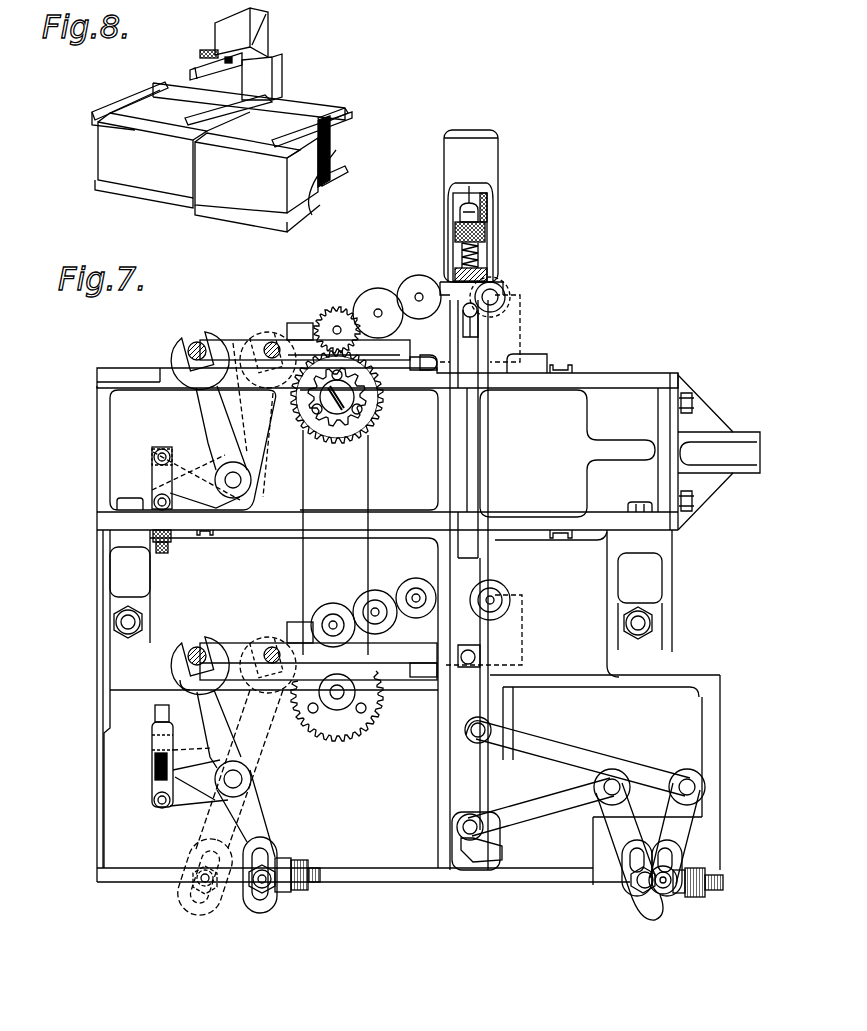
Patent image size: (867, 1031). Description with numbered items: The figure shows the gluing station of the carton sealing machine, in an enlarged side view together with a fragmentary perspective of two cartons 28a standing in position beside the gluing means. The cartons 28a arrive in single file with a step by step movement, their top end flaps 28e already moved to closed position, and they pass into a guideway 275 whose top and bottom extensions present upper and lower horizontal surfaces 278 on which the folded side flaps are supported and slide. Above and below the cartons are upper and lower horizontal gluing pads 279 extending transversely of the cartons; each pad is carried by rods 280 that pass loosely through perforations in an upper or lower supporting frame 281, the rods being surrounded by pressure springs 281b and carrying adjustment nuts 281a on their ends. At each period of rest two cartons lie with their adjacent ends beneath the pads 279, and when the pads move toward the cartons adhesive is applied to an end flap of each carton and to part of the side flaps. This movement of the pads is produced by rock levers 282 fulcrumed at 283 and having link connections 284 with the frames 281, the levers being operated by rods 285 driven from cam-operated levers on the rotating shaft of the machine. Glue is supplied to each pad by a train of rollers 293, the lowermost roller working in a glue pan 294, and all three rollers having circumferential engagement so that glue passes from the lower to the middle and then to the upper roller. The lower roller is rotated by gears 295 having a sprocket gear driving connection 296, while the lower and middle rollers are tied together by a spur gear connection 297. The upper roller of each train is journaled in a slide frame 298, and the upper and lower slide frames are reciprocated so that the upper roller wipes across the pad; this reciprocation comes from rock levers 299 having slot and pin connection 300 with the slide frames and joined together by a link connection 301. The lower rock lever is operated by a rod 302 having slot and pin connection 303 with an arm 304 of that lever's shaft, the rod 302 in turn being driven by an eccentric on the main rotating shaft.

In FIG. 8, the cartons 28a is at (207, 161).
In FIG. 8, the top end flaps 28e is at (140, 117).
In FIG. 8, the guideway 275 is at (321, 192).
In FIG. 8, the horizontal surfaces 278 is at (345, 112).
In FIG. 8, the gluing pads 279 is at (196, 72).
In FIG. 7, the gluing pads 279 is at (487, 274).
In FIG. 7, the rods 280 is at (471, 206).
In FIG. 8, the supporting frames 281 is at (213, 32).
In FIG. 7, the supporting frames 281 is at (485, 230).
In FIG. 7, the adjustment nuts 281a is at (460, 212).
In FIG. 7, the pressure springs 281b is at (480, 258).
In FIG. 7, the rock levers 282 is at (535, 748).
In FIG. 7, the fulcrum 283 is at (684, 775).
In FIG. 7, the link connections 284 is at (482, 707).
In FIG. 7, the rods 285 is at (717, 895).
In FIG. 7, the train of rollers 293 is at (370, 290).
In FIG. 7, the glue pan 294 is at (236, 340).
In FIG. 7, the gears 295 is at (312, 420).
In FIG. 7, the sprocket gear driving connection 296 is at (367, 413).
In FIG. 7, the spur gear connection 297 is at (362, 333).
In FIG. 7, the slide frame 298 is at (421, 278).
In FIG. 7, the rock levers 299 is at (203, 413).
In FIG. 7, the slot and pin connection 300 is at (197, 342).
In FIG. 7, the link connection 301 is at (172, 548).
In FIG. 7, the rod 302 is at (290, 860).
In FIG. 7, the slot and pin connection 303 is at (258, 892).
In FIG. 7, the arm 304 is at (253, 808).